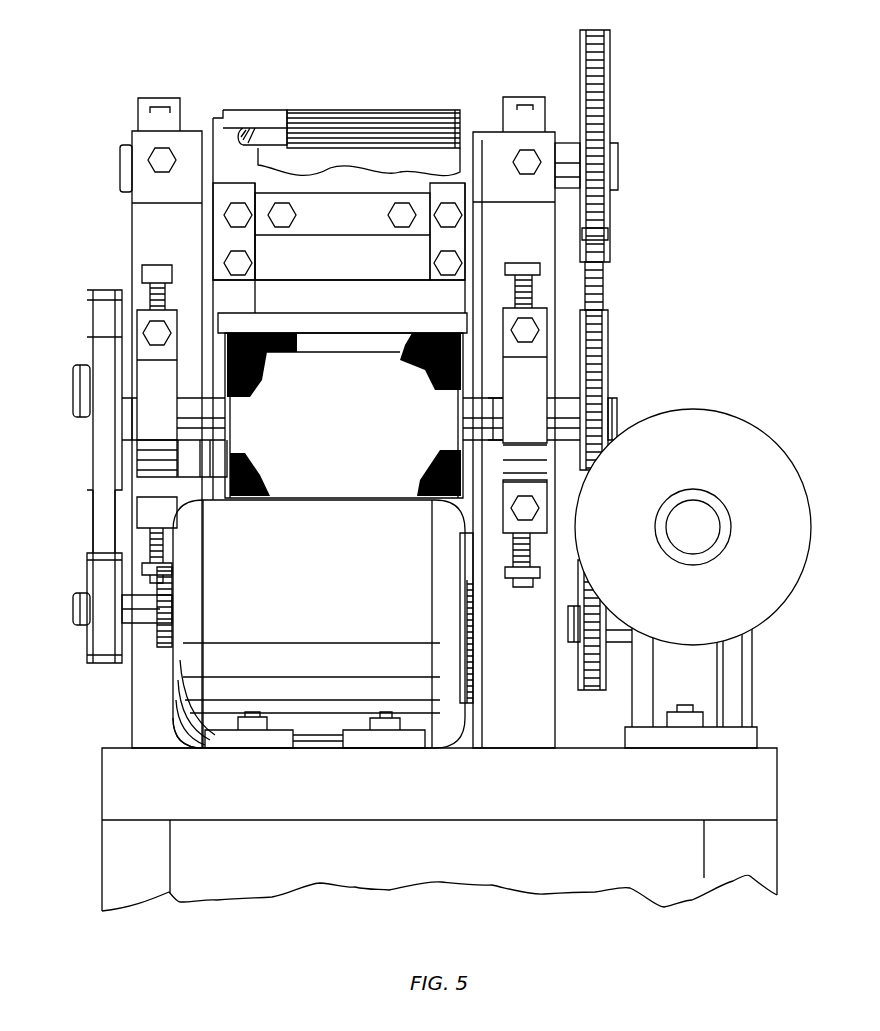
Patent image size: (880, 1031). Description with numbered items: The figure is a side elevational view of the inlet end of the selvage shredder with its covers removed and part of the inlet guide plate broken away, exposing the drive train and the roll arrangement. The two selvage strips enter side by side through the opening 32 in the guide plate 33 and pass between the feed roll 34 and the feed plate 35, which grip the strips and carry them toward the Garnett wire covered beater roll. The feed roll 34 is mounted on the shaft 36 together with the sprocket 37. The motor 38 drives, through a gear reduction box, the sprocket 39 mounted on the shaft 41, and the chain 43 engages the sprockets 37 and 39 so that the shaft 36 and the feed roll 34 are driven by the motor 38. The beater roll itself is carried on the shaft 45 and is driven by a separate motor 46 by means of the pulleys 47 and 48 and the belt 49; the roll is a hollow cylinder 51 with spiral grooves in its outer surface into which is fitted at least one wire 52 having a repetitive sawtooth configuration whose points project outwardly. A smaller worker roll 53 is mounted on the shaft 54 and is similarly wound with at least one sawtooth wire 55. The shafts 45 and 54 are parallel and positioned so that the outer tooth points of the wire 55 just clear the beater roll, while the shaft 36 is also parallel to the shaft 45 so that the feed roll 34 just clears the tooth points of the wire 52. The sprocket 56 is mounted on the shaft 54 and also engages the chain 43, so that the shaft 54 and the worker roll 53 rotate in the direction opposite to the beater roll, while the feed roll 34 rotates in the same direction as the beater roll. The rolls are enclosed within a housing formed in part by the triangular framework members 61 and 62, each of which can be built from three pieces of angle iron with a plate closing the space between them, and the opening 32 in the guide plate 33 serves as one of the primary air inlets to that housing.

The opening 32 is at (270, 130).
The guide plate 33 is at (215, 118).
The feed roll 34 is at (437, 123).
The feed plate 35 is at (333, 168).
The shaft 36 is at (122, 182).
The sprocket 37 is at (610, 94).
The motor 38 is at (775, 436).
The sprocket 39 is at (607, 682).
The shaft 41 is at (568, 636).
The chain 43 is at (603, 294).
The shaft 45 is at (73, 390).
The motor 46 is at (176, 725).
The pulley 47 is at (90, 662).
The pulley 48 is at (90, 487).
The belt 49 is at (92, 527).
The hollow cylinder 51 is at (218, 350).
The wire 52 is at (358, 343).
The worker roll 53 is at (235, 500).
The shaft 54 is at (490, 398).
The wire 55 is at (255, 455).
The sprocket 56 is at (612, 348).
The triangular framework member 61 is at (202, 252).
The triangular framework member 62 is at (560, 234).